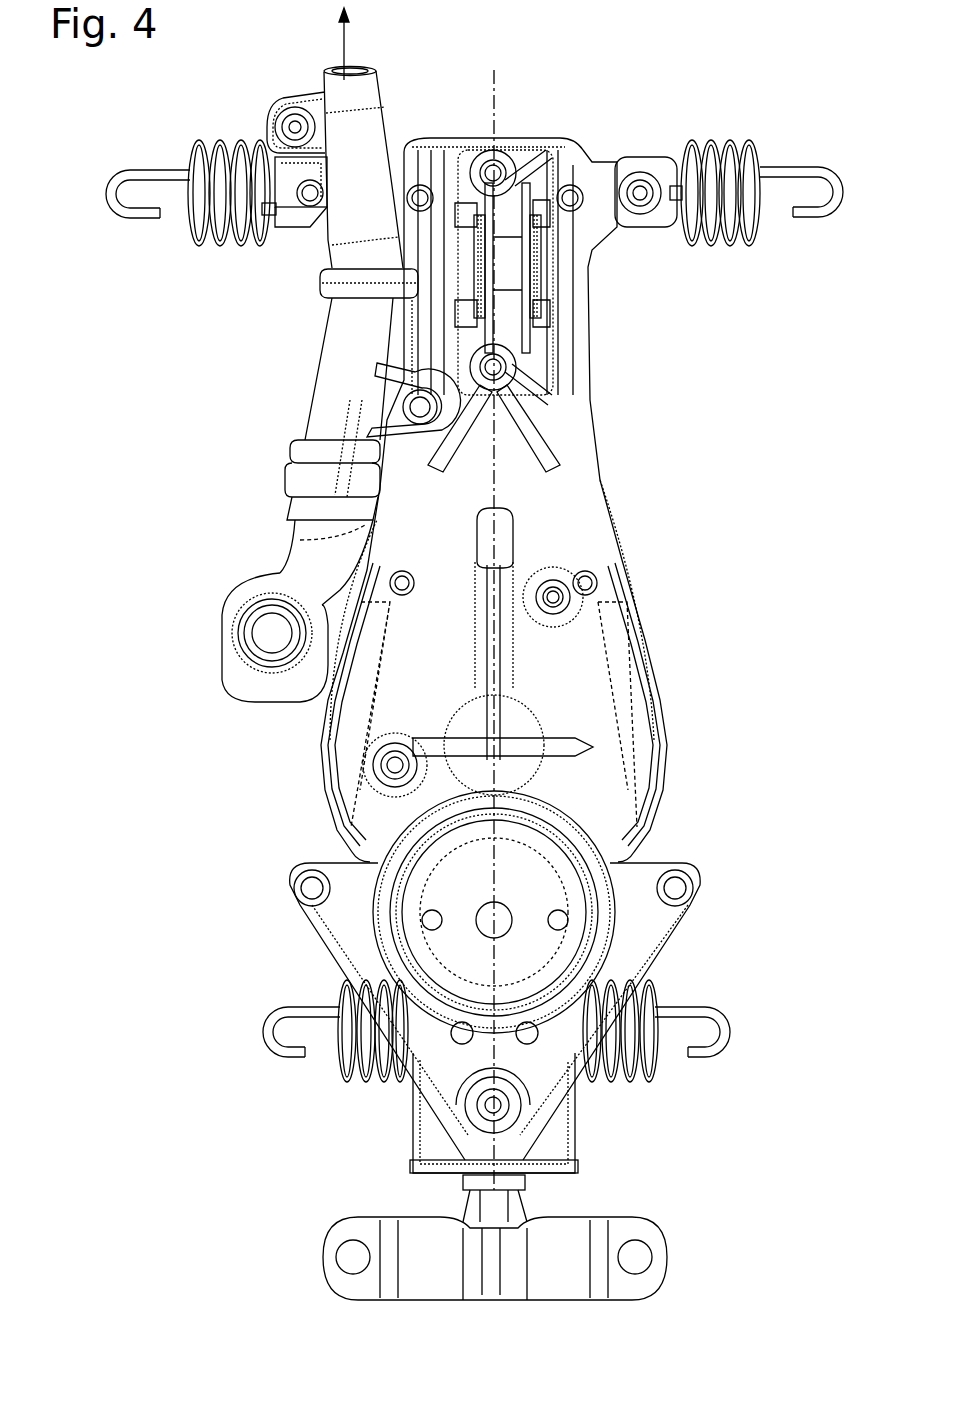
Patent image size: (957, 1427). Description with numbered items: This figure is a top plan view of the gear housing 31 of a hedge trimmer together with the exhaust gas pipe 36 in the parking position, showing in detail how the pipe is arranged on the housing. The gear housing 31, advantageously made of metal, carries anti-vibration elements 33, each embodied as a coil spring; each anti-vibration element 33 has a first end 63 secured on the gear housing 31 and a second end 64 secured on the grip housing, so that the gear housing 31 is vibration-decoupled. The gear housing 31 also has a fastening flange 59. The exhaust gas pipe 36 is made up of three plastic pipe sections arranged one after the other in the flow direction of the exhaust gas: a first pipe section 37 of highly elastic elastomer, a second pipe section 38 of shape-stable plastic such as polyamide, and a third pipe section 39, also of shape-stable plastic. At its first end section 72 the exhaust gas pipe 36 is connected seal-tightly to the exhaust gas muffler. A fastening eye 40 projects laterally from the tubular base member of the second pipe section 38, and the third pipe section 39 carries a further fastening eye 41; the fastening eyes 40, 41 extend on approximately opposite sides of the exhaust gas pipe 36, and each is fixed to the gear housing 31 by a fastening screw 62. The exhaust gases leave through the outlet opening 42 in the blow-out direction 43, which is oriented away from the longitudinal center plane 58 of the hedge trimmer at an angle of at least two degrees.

The gear housing 31 is at (582, 528).
The anti-vibration element 33 is at (183, 233).
The exhaust gas pipe 36 is at (285, 355).
The first pipe section 37 is at (297, 554).
The second pipe section 38 is at (334, 372).
The third pipe section 39 is at (343, 225).
The fastening eye 40 is at (402, 420).
The fastening eye 41 is at (292, 100).
The outlet opening 42 is at (362, 72).
The blow-out direction 43 is at (334, 44).
The longitudinal center plane 58 is at (500, 97).
The fastening flange 59 is at (655, 920).
The fastening screw 62 is at (283, 125).
The first end 63 is at (677, 178).
The second end 64 is at (830, 210).
The first end section 72 is at (247, 626).